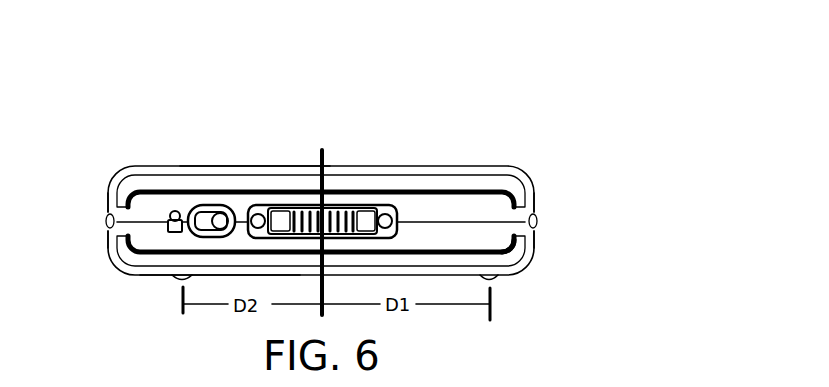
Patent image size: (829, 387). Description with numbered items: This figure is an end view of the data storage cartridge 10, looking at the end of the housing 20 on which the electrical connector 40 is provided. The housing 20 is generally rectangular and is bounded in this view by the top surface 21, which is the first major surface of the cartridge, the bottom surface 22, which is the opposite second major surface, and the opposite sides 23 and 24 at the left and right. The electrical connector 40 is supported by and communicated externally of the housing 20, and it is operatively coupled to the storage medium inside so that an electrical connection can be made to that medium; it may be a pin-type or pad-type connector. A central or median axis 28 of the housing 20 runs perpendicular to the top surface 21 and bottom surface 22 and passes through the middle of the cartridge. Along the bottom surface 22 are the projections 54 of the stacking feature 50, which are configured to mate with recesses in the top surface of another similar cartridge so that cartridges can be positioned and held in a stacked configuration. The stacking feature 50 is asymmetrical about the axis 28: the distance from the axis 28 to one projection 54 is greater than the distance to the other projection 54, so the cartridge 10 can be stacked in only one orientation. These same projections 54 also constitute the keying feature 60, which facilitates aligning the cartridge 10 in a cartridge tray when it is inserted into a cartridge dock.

The data storage cartridge 10 is at (558, 138).
The housing 20 is at (303, 165).
The top surface 21 is at (207, 167).
The bottom surface 22 is at (148, 280).
The side 23 is at (540, 200).
The side 24 is at (107, 205).
The central or median axis 28 is at (327, 157).
The electrical connector 40 is at (358, 203).
The stacking feature 50 is at (532, 278).
The projections 54 is at (172, 290).
The keying feature 60 is at (532, 292).